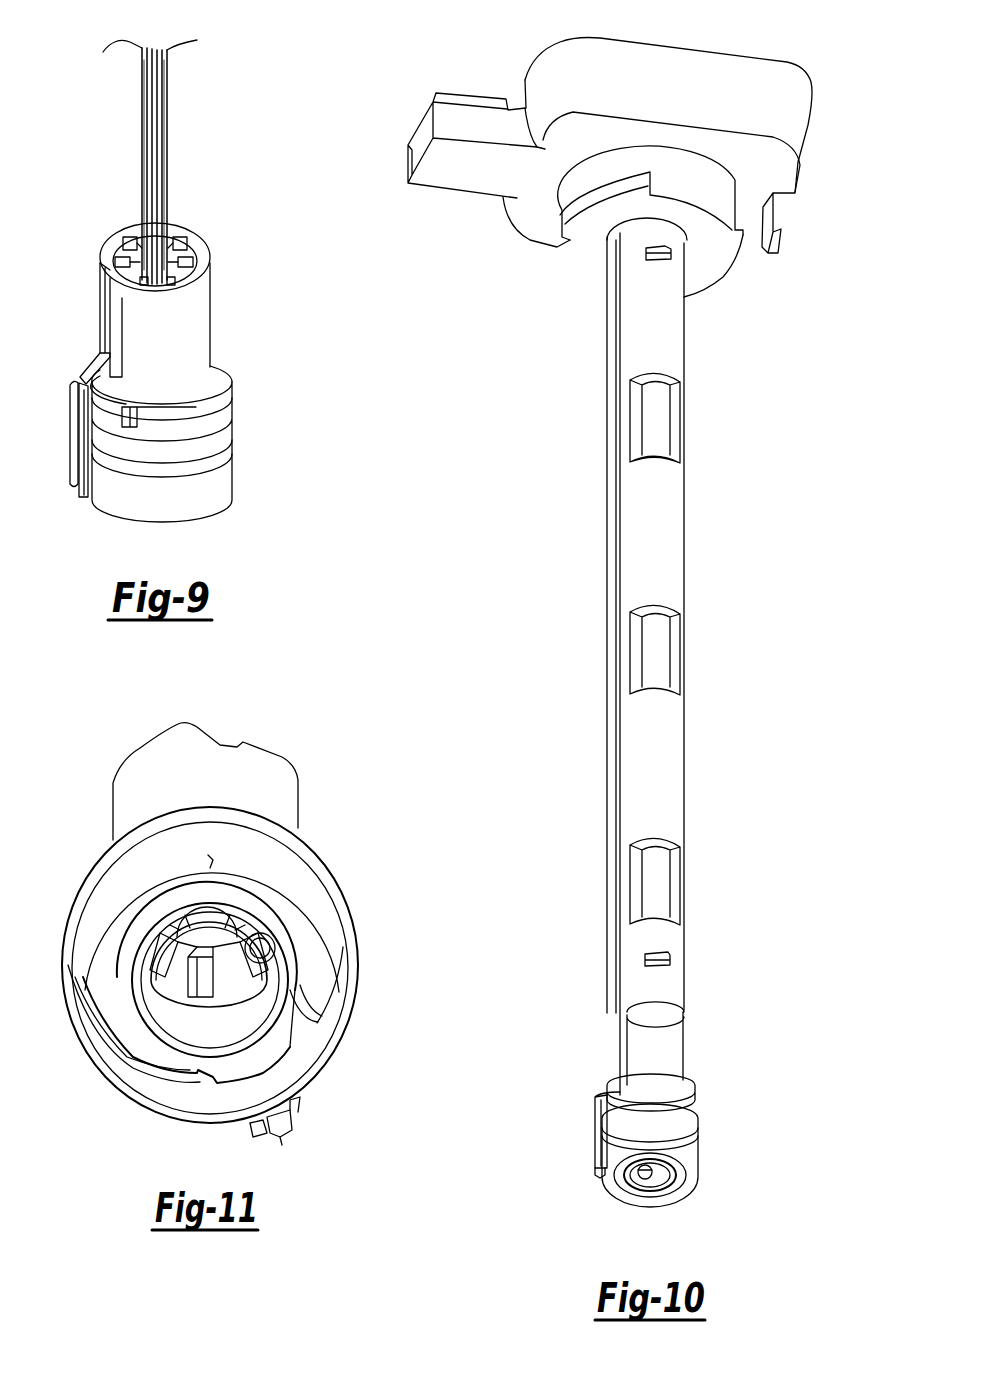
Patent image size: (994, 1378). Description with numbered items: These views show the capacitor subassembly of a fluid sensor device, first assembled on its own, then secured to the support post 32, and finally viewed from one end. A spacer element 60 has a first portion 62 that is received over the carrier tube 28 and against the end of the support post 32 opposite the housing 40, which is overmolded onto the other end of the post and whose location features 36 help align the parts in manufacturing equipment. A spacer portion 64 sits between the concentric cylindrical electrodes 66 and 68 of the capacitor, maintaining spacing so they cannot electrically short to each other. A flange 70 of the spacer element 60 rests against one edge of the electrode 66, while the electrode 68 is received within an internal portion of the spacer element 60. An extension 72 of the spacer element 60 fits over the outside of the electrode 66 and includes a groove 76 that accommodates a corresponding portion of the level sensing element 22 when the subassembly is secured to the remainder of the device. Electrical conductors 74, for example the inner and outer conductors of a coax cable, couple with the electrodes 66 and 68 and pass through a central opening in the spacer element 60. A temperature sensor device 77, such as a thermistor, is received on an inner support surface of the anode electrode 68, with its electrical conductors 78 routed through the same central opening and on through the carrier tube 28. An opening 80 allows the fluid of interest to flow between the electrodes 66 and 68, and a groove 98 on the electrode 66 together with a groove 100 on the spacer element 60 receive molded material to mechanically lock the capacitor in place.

In FIG. 10, the level sensing element 22 is at (594, 1133).
In FIG. 11, the level sensing element 22 is at (285, 1138).
In FIG. 10, the carrier tube 28 is at (664, 636).
In FIG. 11, the carrier tube 28 is at (213, 940).
In FIG. 10, the support post 32 is at (675, 757).
In FIG. 10, the location features 36 is at (670, 254).
In FIG. 10, the housing portion 40 is at (712, 48).
In FIG. 9, the spacer element 60 is at (215, 266).
In FIG. 10, the spacer element 60 is at (692, 1050).
In FIG. 9, the first portion 62 is at (205, 308).
In FIG. 11, the spacer portion 64 is at (150, 898).
In FIG. 9, the electrode 66 is at (225, 467).
In FIG. 10, the electrode 66 is at (693, 1150).
In FIG. 11, the electrode 66 is at (340, 1040).
In FIG. 10, the electrode 68 is at (637, 1195).
In FIG. 11, the electrode 68 is at (290, 1010).
In FIG. 9, the flange 70 is at (232, 405).
In FIG. 10, the flange 70 is at (697, 1112).
In FIG. 9, the extension 72 is at (88, 500).
In FIG. 10, the extension 72 is at (598, 1177).
In FIG. 11, the extension 72 is at (250, 1130).
In FIG. 9, the electrical conductors 74 is at (157, 110).
In FIG. 9, the groove 76 is at (72, 405).
In FIG. 11, the groove 76 is at (275, 1137).
In FIG. 11, the temperature sensor device 77 is at (263, 953).
In FIG. 9, the electrical conductors 78 is at (150, 148).
In FIG. 9, the opening 80 is at (192, 405).
In FIG. 9, the groove 98 is at (100, 462).
In FIG. 10, the groove 98 is at (650, 1139).
In FIG. 11, the groove 98 is at (108, 852).
In FIG. 9, the groove 100 is at (85, 376).